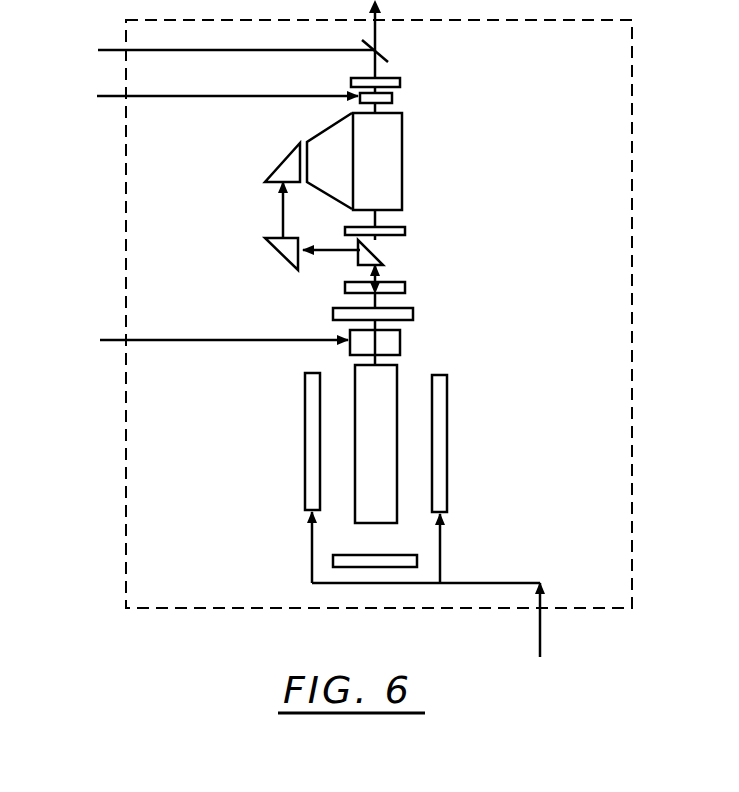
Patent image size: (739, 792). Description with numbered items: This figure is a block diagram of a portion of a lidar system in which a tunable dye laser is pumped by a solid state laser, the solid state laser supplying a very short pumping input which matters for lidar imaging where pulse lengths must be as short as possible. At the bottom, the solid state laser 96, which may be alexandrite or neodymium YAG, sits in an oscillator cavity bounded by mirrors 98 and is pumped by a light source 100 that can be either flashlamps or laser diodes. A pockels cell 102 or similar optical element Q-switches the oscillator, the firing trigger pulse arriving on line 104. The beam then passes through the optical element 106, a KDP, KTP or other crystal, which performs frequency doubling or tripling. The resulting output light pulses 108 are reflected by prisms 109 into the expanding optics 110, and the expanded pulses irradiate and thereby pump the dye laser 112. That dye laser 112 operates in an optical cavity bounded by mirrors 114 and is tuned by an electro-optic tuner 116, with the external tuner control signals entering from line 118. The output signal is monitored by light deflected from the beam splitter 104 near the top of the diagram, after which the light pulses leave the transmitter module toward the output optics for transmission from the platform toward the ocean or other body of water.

The solid state laser 96 is at (378, 523).
The mirrors 98 is at (413, 314).
The light source 100 is at (305, 440).
The pockels cell 102 is at (400, 345).
The line / beam splitter 104 is at (386, 55).
The optical element 106 is at (405, 288).
The output light pulses 108 is at (378, 280).
The prisms 109 is at (287, 154).
The expanding optics 110 is at (336, 125).
The dye laser 112 is at (402, 160).
The mirrors 114 is at (400, 82).
The electro-optic tuner 116 is at (392, 97).
The line 118 is at (205, 97).